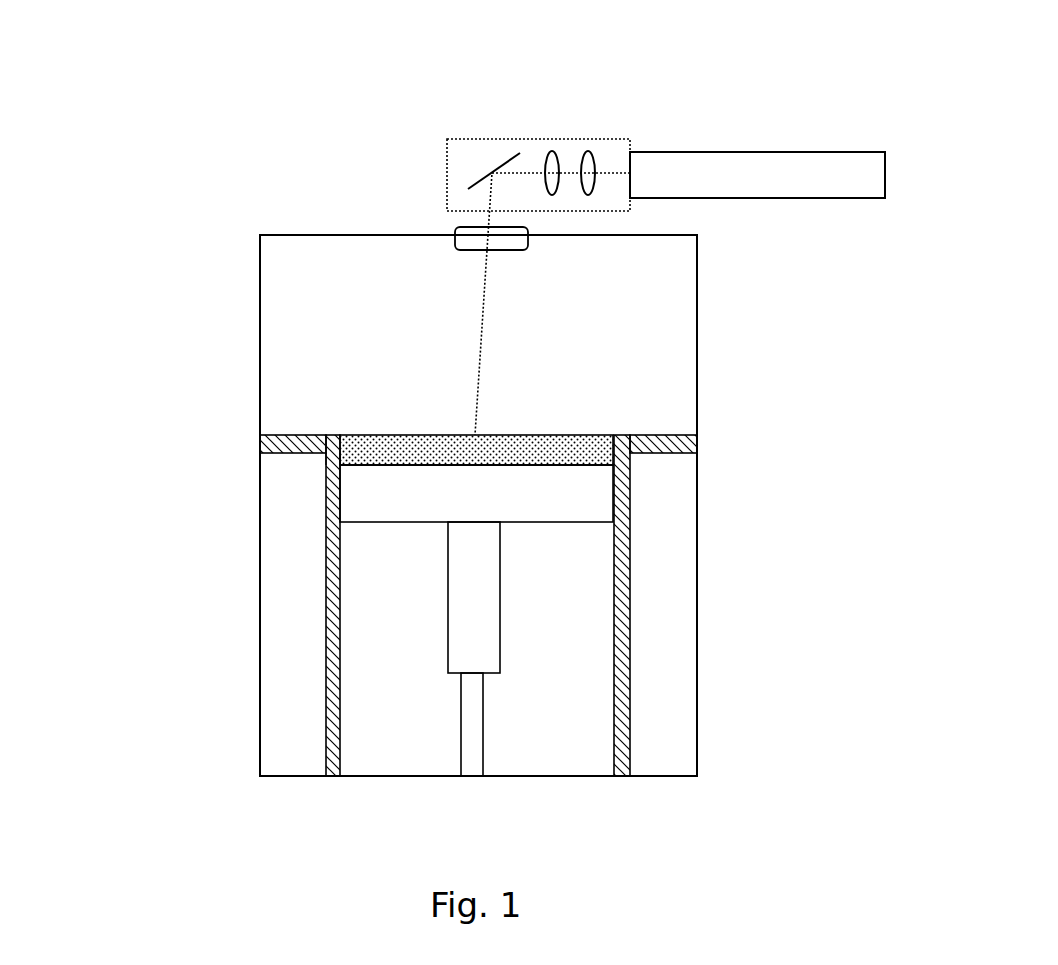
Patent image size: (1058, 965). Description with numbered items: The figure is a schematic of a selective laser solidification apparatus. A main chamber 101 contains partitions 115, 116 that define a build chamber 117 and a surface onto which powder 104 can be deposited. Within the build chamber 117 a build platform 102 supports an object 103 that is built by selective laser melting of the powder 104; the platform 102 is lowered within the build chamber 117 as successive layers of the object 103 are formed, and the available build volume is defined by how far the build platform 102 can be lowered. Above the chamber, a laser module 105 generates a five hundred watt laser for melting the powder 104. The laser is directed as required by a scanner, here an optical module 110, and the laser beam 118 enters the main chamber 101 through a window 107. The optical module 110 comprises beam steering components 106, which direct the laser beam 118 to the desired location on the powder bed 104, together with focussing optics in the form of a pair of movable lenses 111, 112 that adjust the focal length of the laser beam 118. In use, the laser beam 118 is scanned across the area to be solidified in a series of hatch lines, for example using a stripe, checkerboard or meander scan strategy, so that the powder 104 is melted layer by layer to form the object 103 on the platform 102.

The main chamber 101 is at (258, 322).
The build platform 102 is at (547, 495).
The object 103 is at (468, 470).
The powder 104 is at (584, 442).
The laser module 105 is at (763, 151).
The beam steering components 106 is at (492, 160).
The window 107 is at (462, 234).
The optical module 110 is at (625, 137).
The movable lens 111 is at (550, 139).
The movable lens 112 is at (589, 139).
The partition 115 is at (699, 447).
The partition 116 is at (338, 627).
The build chamber 117 is at (348, 459).
The laser beam 118 is at (461, 349).